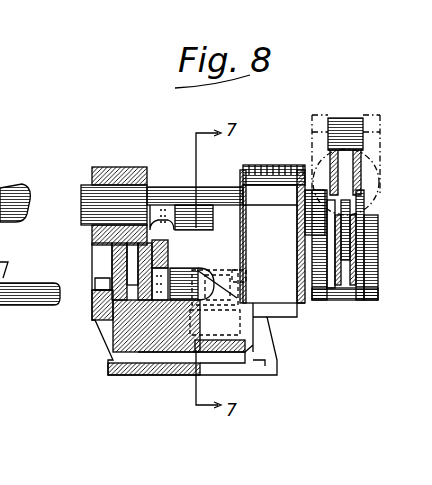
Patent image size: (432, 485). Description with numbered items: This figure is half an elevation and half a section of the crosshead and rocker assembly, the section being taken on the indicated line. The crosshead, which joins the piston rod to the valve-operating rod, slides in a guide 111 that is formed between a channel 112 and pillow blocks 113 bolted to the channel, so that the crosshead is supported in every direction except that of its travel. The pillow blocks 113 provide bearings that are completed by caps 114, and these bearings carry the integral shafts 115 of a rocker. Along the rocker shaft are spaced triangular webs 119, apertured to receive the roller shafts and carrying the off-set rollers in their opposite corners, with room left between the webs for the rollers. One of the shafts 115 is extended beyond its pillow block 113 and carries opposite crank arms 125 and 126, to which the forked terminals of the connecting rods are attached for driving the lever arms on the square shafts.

The guide 111 is at (136, 372).
The channel 112 is at (260, 370).
The pillow blocks 113 is at (112, 262).
The caps 114 is at (268, 170).
The integral shafts 115 is at (85, 206).
The triangular webs 119 is at (226, 247).
The crank arm 125 is at (353, 117).
The crank arm 126 is at (345, 300).